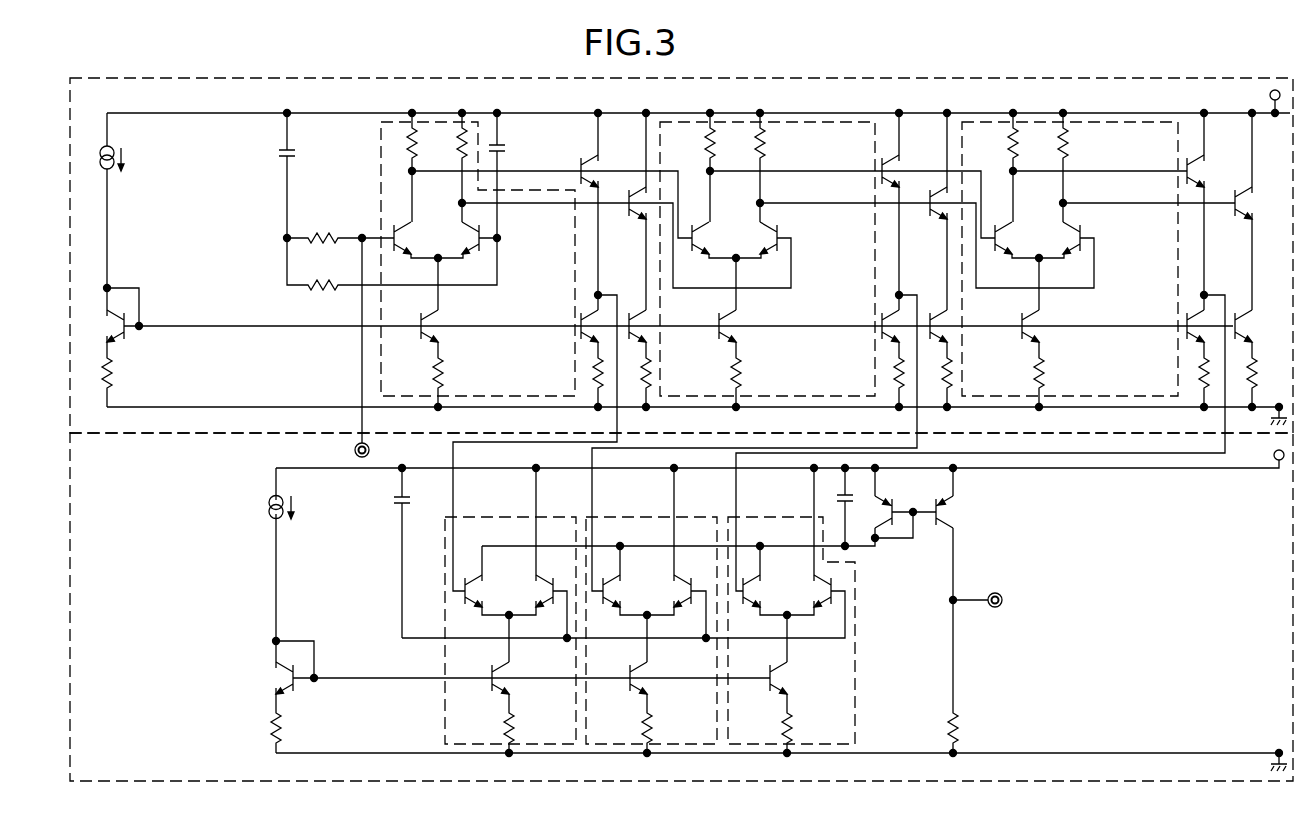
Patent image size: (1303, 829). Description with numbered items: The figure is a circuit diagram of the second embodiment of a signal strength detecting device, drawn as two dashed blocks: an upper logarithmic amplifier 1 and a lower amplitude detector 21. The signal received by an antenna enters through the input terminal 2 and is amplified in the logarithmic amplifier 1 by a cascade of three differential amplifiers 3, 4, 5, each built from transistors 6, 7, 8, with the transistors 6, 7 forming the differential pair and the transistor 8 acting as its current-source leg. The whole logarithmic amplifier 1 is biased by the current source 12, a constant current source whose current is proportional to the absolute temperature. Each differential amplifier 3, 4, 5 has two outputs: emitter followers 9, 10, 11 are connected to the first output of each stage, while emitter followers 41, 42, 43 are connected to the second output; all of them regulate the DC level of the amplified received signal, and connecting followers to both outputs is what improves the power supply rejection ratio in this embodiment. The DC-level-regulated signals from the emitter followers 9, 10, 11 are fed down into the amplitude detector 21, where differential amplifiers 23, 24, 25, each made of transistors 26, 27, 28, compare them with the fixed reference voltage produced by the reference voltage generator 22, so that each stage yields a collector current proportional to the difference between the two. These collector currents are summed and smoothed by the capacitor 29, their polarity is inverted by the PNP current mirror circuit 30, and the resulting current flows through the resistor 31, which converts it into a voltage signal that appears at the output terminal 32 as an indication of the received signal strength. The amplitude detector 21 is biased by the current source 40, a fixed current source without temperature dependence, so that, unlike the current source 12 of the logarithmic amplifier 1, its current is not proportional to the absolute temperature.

The logarithmic amplifier 1 is at (70, 146).
The amplitude detector 21 is at (70, 471).
The current source 12 is at (106, 172).
The differential amplifier 3 is at (381, 183).
The differential amplifier 4 is at (878, 251).
The differential amplifier 5 is at (1180, 263).
The transistor 6 is at (411, 225).
The transistor 7 is at (466, 259).
The transistor 8 is at (423, 341).
The emitter follower 9 is at (593, 159).
The emitter follower 10 is at (903, 165).
The emitter follower 11 is at (1208, 169).
The emitter follower 41 is at (638, 223).
The emitter follower 42 is at (936, 223).
The emitter follower 43 is at (1240, 225).
The input terminal 2 is at (378, 452).
The current source 40 is at (268, 498).
The reference voltage generator 22 is at (397, 504).
The differential amplifier 23 is at (513, 517).
The differential amplifier 24 is at (652, 517).
The differential amplifier 25 is at (778, 517).
The transistor 26 is at (473, 606).
The transistor 27 is at (543, 606).
The transistor 28 is at (499, 697).
The capacitor 29 is at (856, 500).
The PNP current mirror circuit 30 is at (923, 532).
The resistor 31 is at (974, 676).
The output terminal 32 is at (998, 600).